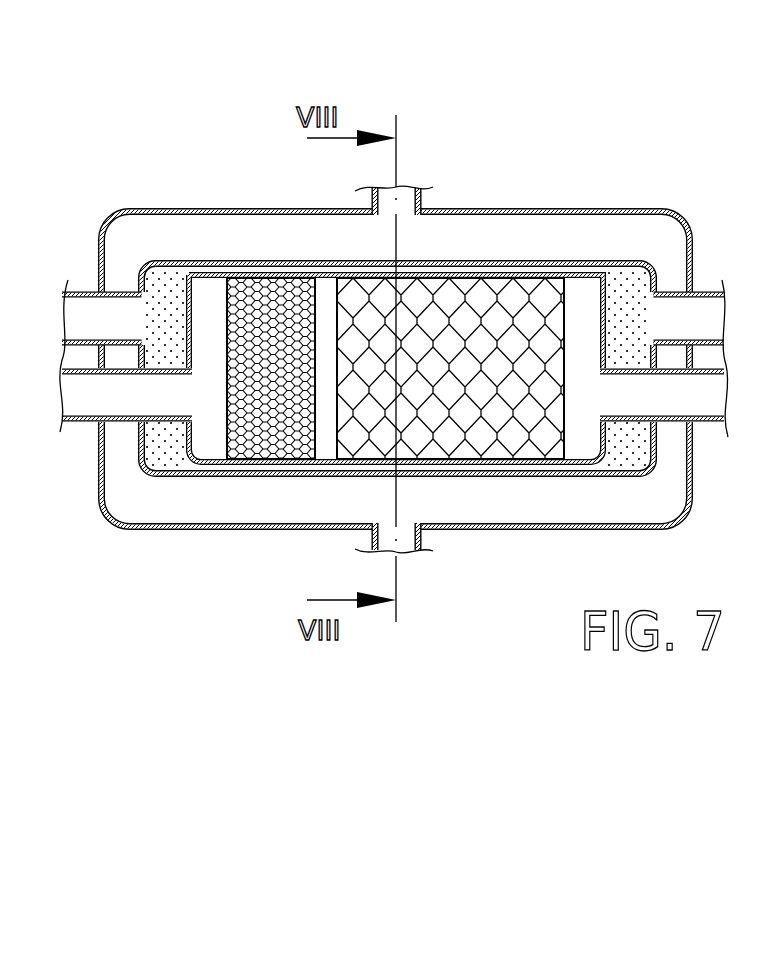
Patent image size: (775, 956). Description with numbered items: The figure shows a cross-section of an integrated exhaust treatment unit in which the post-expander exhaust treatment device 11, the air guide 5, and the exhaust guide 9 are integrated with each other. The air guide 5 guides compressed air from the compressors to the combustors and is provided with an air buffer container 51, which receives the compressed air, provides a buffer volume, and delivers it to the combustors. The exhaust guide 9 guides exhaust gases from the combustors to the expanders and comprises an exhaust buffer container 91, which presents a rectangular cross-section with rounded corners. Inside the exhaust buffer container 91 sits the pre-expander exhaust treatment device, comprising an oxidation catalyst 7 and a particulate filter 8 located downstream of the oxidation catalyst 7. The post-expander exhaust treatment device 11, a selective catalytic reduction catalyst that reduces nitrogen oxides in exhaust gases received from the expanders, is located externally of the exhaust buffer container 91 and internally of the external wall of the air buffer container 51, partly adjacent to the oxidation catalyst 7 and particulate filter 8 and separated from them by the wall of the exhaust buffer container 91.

The air guide 5 is at (418, 202).
The oxidation catalyst 7 is at (266, 408).
The particulate filter 8 is at (525, 350).
The exhaust guide 9 is at (61, 422).
The post-expander exhaust treatment device 11 is at (647, 265).
The air buffer container 51 is at (692, 254).
The exhaust buffer container 91 is at (522, 272).